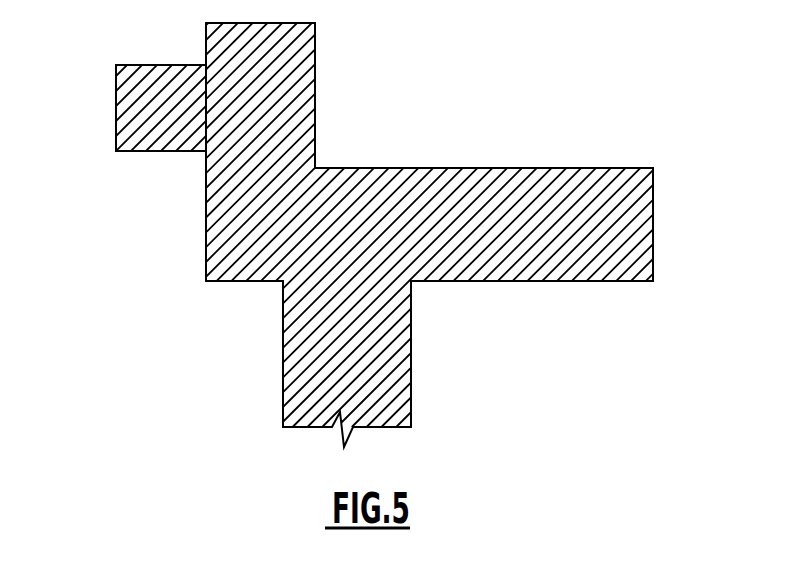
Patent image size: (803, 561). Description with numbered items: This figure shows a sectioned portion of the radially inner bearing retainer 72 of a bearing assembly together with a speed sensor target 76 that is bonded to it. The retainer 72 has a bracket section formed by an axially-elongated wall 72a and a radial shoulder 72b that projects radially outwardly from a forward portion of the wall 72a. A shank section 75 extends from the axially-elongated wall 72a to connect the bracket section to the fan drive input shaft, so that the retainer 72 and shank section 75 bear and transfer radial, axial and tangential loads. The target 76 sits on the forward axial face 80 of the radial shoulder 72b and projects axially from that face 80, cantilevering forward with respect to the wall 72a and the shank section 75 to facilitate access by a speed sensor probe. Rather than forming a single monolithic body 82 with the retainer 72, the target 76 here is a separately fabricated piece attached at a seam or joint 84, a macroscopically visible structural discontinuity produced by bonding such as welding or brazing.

The radially inner bearing retainer 72 is at (597, 281).
The axially-elongated wall 72a is at (547, 203).
The radial shoulder 72b is at (242, 225).
The shank section 75 is at (411, 325).
The speed sensor target 76 is at (116, 92).
The forward axial face 80 is at (205, 157).
The monolithic body 82 is at (366, 164).
The joint 84 is at (202, 95).